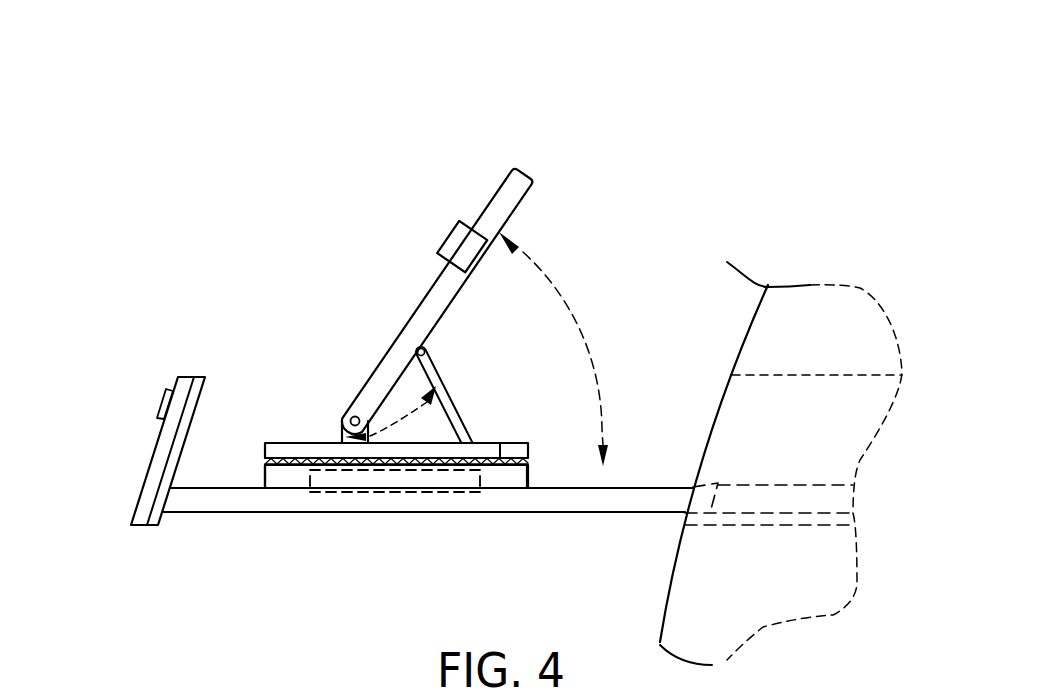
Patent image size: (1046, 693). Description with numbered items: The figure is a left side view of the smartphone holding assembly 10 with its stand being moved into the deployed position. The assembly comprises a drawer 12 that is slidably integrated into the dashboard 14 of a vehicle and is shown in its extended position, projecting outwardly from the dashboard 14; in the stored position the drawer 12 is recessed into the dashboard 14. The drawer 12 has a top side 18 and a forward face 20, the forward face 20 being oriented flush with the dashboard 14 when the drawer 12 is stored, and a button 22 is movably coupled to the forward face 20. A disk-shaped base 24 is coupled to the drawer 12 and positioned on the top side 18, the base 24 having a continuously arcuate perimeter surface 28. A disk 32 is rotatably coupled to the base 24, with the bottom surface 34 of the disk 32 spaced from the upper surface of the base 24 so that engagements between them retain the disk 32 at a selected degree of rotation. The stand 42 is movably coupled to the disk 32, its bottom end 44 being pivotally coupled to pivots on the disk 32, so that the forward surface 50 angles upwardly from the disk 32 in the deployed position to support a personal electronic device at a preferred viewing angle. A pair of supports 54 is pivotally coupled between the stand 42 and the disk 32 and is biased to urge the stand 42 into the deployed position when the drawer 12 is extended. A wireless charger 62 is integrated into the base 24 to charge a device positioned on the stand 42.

The smartphone holding assembly 10 is at (336, 112).
The drawer 12 is at (197, 513).
The dashboard 14 is at (750, 332).
The top side 18 is at (288, 488).
The forward face 20 is at (160, 431).
The button 22 is at (160, 405).
The base 24 is at (503, 443).
The perimeter surface 28 is at (505, 470).
The disk 32 is at (264, 443).
The bottom surface 34 is at (299, 465).
The stand 42 is at (410, 325).
The bottom end 44 is at (354, 444).
The forward surface 50 is at (498, 194).
The supports 54 is at (450, 390).
The wireless charger 62 is at (495, 477).